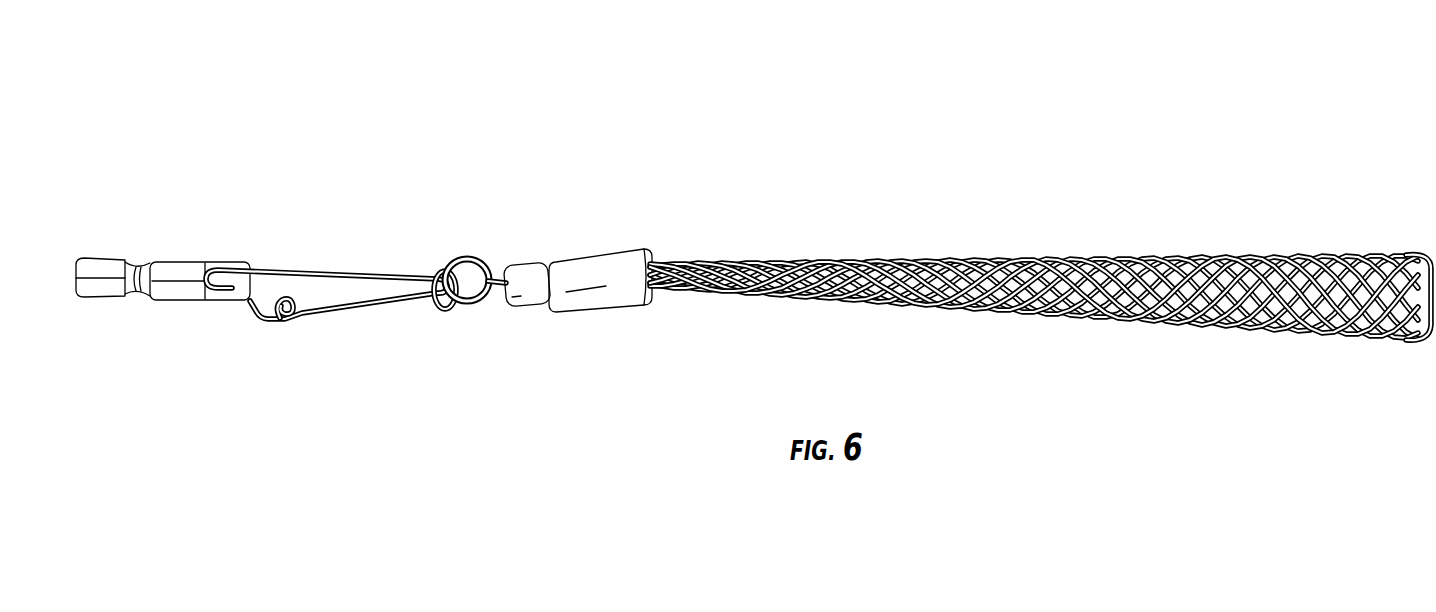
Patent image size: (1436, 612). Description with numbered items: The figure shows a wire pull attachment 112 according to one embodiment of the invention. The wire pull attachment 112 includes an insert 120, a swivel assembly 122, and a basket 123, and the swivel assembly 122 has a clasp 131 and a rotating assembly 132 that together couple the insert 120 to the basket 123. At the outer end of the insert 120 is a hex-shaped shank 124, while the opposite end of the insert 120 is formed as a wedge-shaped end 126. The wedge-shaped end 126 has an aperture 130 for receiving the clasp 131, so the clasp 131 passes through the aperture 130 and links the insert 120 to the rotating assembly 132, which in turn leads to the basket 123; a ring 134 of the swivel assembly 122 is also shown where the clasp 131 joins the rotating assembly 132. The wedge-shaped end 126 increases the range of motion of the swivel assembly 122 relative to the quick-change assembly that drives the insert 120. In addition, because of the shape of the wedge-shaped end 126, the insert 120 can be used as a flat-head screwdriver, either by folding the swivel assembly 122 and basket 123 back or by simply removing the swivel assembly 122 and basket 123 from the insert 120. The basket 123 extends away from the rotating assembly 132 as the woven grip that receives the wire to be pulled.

The wire pull attachment 112 is at (1053, 100).
The insert 120 is at (140, 258).
The swivel assembly 122 is at (470, 250).
The basket 123 is at (1067, 248).
The hex shank 124 is at (118, 257).
The wedge-shaped end 126 is at (178, 268).
The aperture 130 is at (240, 300).
The clasp 131 is at (310, 273).
The rotating assembly 132 is at (532, 268).
The swivel ring 134 is at (460, 310).